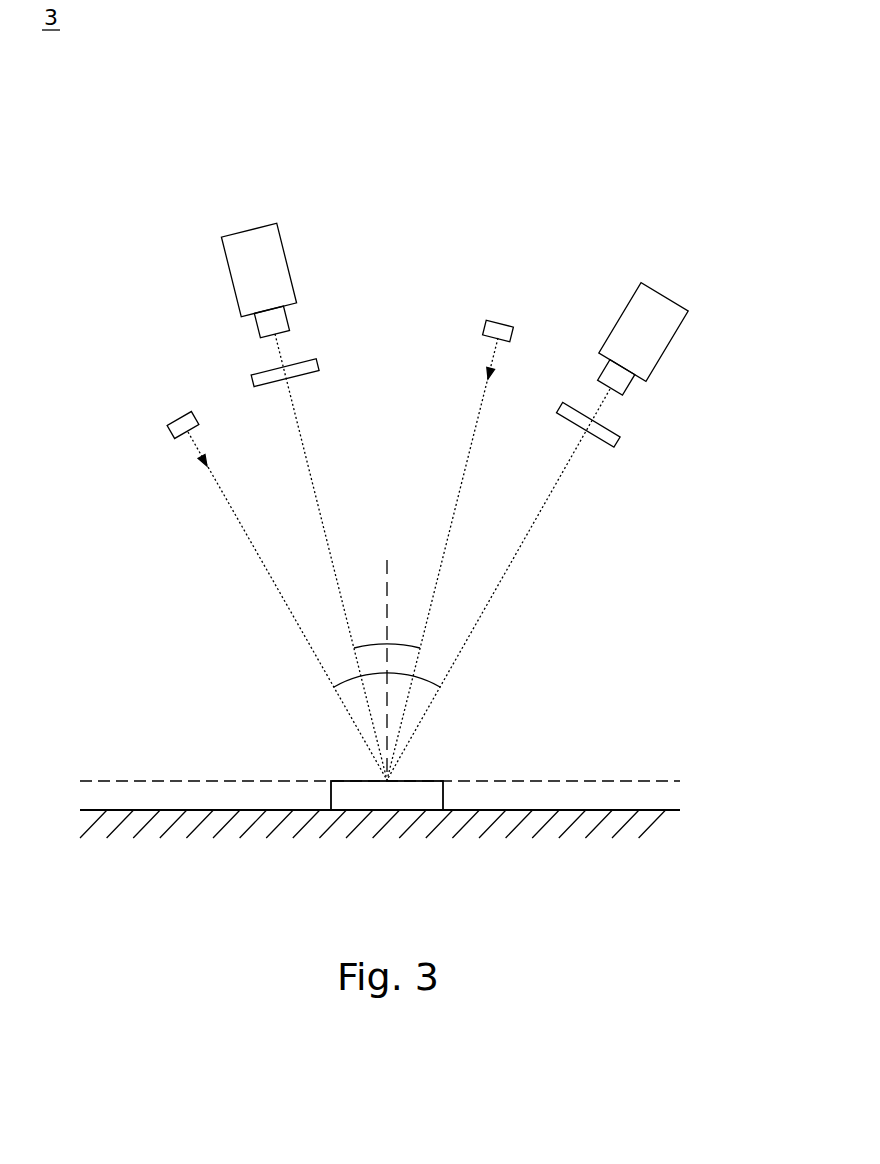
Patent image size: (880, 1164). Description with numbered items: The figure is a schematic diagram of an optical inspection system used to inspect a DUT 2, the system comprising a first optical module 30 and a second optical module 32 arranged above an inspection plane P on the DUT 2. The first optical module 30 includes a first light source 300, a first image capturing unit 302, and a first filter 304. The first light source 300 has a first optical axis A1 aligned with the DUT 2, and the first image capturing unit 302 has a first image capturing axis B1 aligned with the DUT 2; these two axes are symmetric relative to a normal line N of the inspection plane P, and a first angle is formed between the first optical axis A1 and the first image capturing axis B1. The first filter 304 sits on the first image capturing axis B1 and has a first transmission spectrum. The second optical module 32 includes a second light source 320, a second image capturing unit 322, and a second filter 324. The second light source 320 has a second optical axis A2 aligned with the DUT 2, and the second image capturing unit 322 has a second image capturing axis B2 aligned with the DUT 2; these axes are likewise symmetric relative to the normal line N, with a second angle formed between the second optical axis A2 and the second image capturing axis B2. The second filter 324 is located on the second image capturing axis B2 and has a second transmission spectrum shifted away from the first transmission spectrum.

The first optical module 30 is at (360, 230).
The first light source 300 is at (497, 322).
The first image capturing unit 302 is at (250, 230).
The first filter 304 is at (318, 358).
The second optical module 32 is at (475, 436).
The second light source 320 is at (197, 428).
The second image capturing unit 322 is at (660, 367).
The second filter 324 is at (618, 444).
The DUT 2 is at (443, 797).
The inspection plane P is at (622, 778).
The normal line N is at (386, 655).
The first optical axis A1 is at (477, 419).
The second optical axis A2 is at (243, 530).
The first image capturing axis B1 is at (297, 419).
The second image capturing axis B2 is at (502, 583).